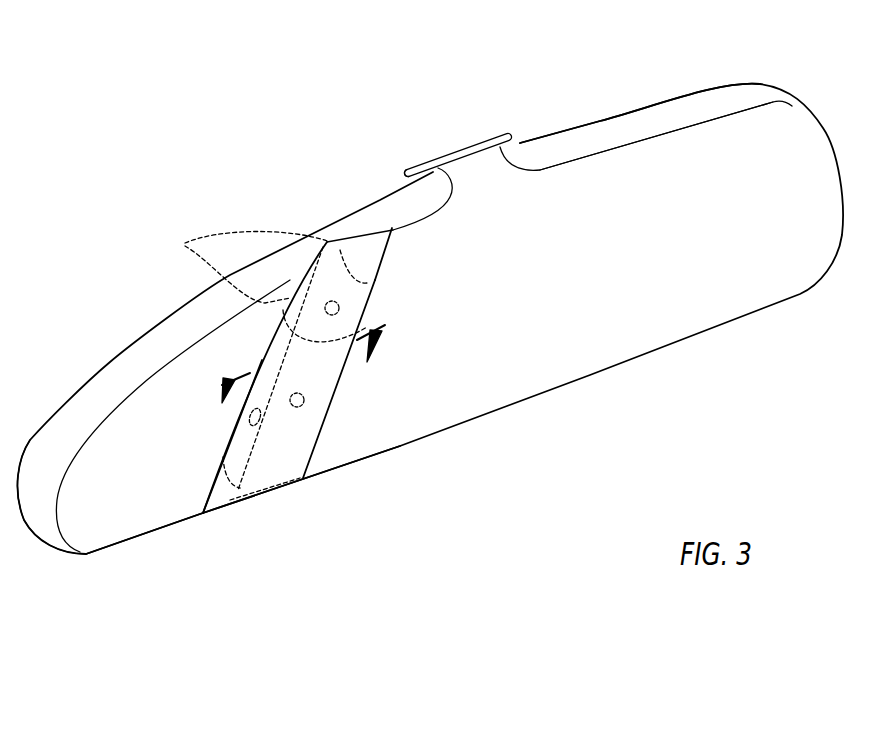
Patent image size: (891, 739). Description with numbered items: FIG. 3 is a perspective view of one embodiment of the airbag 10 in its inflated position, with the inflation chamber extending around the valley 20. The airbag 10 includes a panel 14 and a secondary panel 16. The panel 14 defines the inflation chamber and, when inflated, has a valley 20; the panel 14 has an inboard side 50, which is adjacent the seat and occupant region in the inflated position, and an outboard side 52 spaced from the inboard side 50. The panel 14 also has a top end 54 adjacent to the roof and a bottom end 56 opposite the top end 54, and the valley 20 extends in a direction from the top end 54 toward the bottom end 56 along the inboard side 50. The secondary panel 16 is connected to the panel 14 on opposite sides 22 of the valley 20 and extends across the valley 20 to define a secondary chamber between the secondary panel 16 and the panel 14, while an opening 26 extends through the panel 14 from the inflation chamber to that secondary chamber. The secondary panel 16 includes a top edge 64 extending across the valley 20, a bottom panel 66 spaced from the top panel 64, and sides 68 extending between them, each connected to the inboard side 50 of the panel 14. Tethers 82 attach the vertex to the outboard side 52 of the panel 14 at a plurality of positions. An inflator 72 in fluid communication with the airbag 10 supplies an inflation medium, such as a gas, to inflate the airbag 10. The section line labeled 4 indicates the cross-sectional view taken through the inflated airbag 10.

The airbag 10 is at (817, 40).
The panel 14 is at (777, 147).
The secondary panel 16 is at (278, 356).
The valley 20 is at (367, 283).
The opposite sides 22 is at (337, 250).
The opening 26 is at (343, 311).
The inboard side 50 is at (670, 128).
The outboard side 52 is at (601, 122).
The top end 54 is at (143, 347).
The bottom end 56 is at (127, 545).
The top edge 64 is at (381, 250).
The bottom panel 66 is at (276, 492).
The sides 68 is at (377, 276).
The inflator 72 is at (428, 168).
The tethers 82 is at (252, 440).
The section line 4- 4 is at (300, 361).